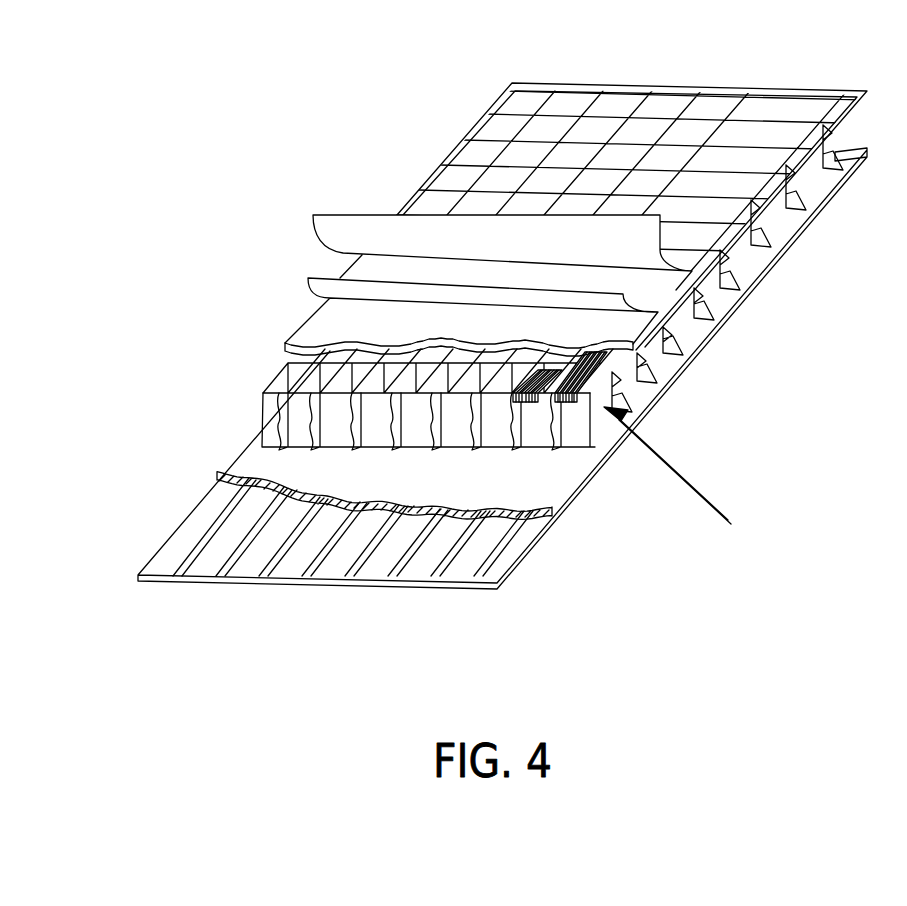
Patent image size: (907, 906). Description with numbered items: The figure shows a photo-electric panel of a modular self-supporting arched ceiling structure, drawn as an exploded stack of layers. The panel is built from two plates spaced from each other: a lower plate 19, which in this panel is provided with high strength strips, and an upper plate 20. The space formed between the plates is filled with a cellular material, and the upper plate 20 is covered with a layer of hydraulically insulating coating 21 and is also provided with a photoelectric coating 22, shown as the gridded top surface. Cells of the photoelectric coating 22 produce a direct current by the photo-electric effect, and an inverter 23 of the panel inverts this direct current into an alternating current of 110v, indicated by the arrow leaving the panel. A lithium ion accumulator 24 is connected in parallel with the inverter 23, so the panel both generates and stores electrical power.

The lower plate 19 is at (527, 553).
The upper plate 20 is at (632, 332).
The layer of hydraulically insulating coating 21 is at (663, 297).
The photoelectric coating 22 is at (753, 108).
The inverter 23 is at (583, 378).
The lithium ion accumulator 24 is at (533, 397).
The alternating current of 110V 110v is at (682, 479).